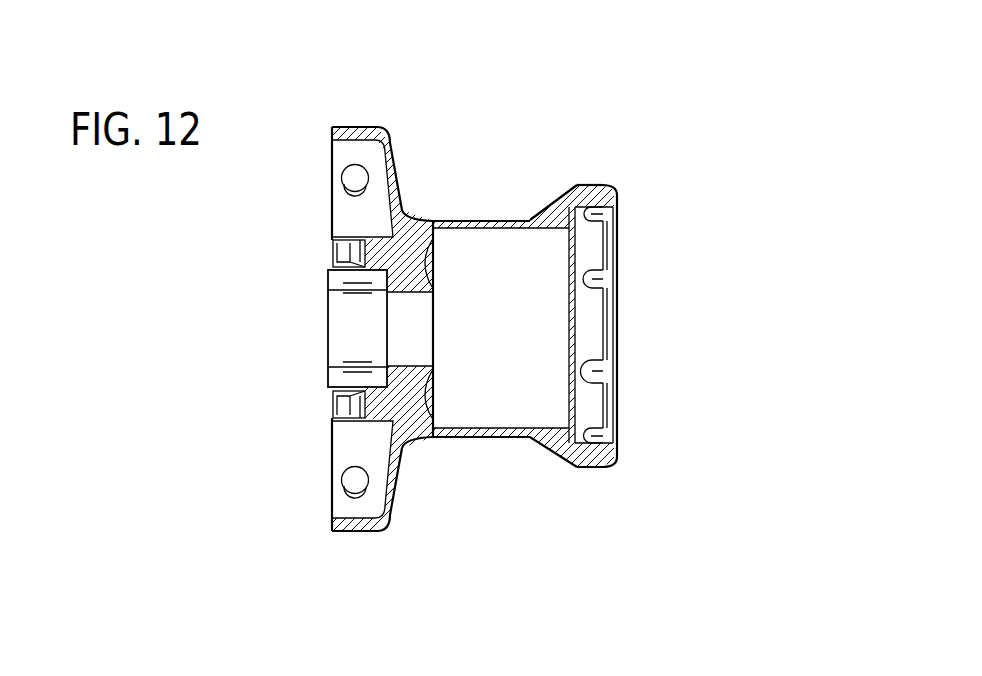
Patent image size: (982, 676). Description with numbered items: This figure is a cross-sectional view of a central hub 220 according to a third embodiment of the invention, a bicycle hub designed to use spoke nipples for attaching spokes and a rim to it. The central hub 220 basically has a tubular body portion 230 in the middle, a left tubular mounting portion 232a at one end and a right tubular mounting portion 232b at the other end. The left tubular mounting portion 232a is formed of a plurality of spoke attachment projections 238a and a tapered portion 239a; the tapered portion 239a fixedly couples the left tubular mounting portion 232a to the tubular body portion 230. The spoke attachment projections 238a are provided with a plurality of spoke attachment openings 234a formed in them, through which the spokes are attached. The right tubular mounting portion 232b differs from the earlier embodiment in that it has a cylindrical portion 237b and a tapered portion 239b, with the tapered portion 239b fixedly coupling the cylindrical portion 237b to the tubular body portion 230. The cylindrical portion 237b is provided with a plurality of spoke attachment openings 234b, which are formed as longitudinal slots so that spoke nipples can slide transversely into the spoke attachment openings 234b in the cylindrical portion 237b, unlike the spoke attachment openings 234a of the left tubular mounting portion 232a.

The central hub 220 is at (656, 167).
The tubular body portion 230 is at (508, 249).
The left tubular mounting portion 232a is at (365, 330).
The right tubular mounting portion 232b is at (666, 328).
The spoke attachment openings 234a is at (345, 173).
The spoke attachment openings 234b is at (585, 374).
The cylindrical portion 237b is at (596, 186).
The spoke attachment projections 238a is at (352, 125).
The tapered portion 239a is at (428, 192).
The tapered portion 239b is at (551, 200).